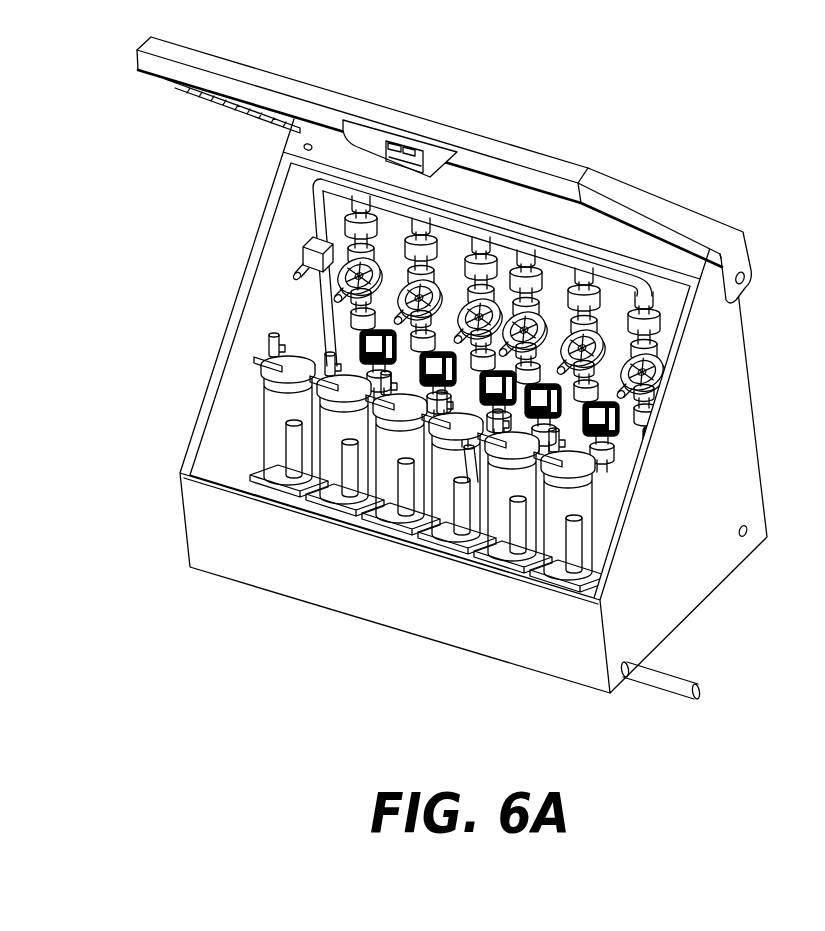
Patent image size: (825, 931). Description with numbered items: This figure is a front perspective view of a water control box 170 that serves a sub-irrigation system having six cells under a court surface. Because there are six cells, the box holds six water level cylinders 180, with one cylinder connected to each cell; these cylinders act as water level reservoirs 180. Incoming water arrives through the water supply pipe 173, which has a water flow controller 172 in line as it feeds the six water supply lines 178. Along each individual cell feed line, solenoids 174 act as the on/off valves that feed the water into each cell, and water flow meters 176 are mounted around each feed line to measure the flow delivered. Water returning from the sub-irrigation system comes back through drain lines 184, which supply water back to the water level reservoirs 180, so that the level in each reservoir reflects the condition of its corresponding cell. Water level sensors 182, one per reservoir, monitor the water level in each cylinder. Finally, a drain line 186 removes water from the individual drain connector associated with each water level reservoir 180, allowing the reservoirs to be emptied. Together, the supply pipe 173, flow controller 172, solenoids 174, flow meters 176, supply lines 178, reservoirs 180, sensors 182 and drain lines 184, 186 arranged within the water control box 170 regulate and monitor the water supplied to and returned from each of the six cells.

The water control box 170 is at (412, 402).
The water flow controller 172 is at (300, 258).
The water supply pipe 173 is at (327, 283).
The solenoids 174 is at (340, 297).
The water flow meters 176 is at (358, 346).
The water supply lines 178 is at (470, 472).
The water level cylinders 180 is at (268, 425).
The water level sensors 182 is at (266, 344).
The drain lines 184 is at (465, 432).
The drain line 186 is at (653, 682).